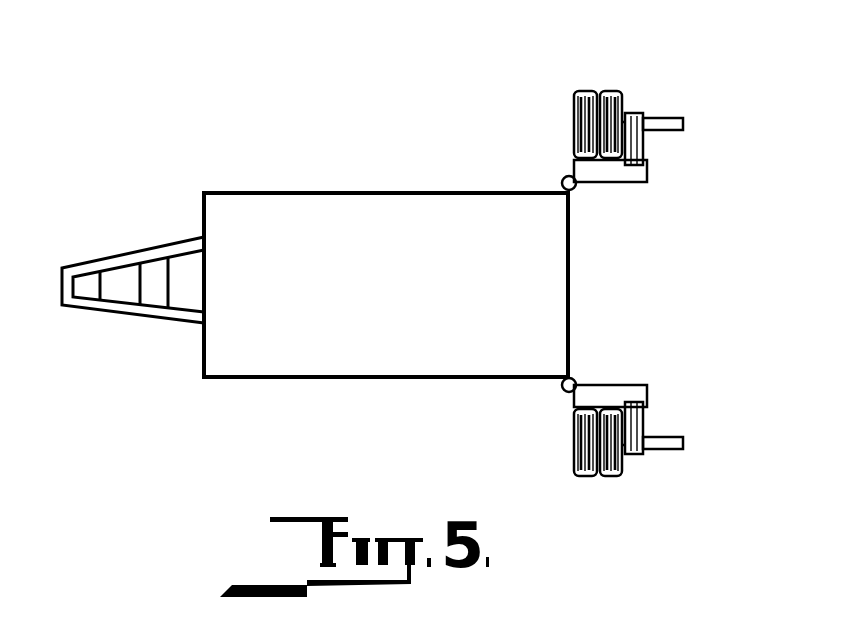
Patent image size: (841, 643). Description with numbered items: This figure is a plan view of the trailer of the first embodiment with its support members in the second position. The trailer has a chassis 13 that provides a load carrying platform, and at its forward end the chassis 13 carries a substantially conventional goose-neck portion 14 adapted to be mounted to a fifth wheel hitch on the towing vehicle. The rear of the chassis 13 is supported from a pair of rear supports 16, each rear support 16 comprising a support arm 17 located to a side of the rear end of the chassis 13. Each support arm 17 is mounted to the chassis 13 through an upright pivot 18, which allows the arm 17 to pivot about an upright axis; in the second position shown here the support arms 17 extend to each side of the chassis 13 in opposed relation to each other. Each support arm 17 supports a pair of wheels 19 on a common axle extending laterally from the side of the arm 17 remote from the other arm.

The chassis 13 is at (384, 292).
The goose-neck portion 14 is at (118, 259).
The rear support 16 is at (634, 250).
The support arm 17 is at (614, 183).
The upright pivot 18 is at (562, 183).
The wheels 19 is at (573, 122).